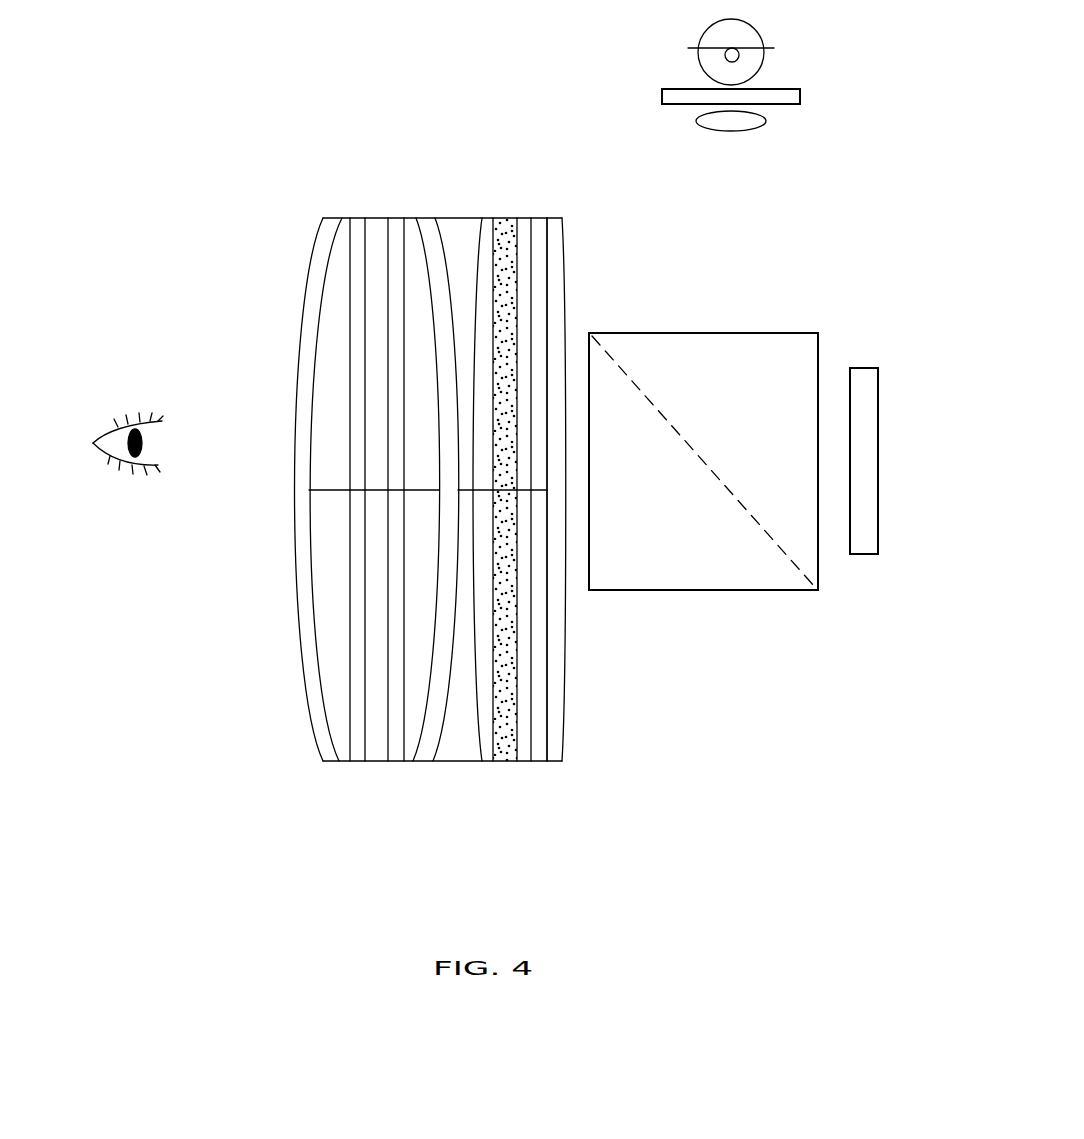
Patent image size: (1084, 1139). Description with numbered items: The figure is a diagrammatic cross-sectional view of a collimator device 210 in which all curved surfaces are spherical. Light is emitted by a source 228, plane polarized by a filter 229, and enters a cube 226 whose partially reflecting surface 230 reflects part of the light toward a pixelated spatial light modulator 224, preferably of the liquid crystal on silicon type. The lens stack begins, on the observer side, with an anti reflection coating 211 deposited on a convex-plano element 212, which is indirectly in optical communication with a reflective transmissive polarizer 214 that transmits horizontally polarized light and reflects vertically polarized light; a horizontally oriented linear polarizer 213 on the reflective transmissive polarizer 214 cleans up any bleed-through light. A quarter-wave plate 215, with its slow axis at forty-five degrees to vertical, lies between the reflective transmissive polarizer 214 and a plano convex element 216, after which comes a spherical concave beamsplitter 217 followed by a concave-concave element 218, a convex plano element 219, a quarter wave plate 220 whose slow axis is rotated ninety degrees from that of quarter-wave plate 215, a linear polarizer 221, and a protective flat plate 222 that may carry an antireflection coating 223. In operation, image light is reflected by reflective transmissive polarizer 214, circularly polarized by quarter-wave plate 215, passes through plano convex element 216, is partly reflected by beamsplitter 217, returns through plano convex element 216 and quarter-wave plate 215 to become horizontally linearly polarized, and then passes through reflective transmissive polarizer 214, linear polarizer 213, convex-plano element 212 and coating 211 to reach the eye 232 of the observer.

The device 210 is at (580, 200).
The anti reflection coating 211 is at (308, 303).
The convex-plano element 212 is at (343, 220).
The linear polarizer 213 is at (360, 220).
The reflective transmissive polarizer 214 is at (378, 223).
The quarter-wave plate 215 is at (393, 222).
The plano convex element 216 is at (412, 752).
The concave beamsplitter 217 is at (426, 752).
The concave-concave element 218 is at (448, 750).
The convex plano element 219 is at (488, 752).
The quarter wave plate 220 is at (507, 220).
The linear polarizer 221 is at (527, 225).
The protective flat plate 222 is at (540, 222).
The antireflection coating 223 is at (555, 268).
The spatial light modulator 224 is at (863, 373).
The cube 226 is at (727, 332).
The source 228 is at (750, 36).
The filter 229 is at (797, 93).
The partially reflecting surface 230 is at (680, 430).
The eye 232 is at (120, 440).